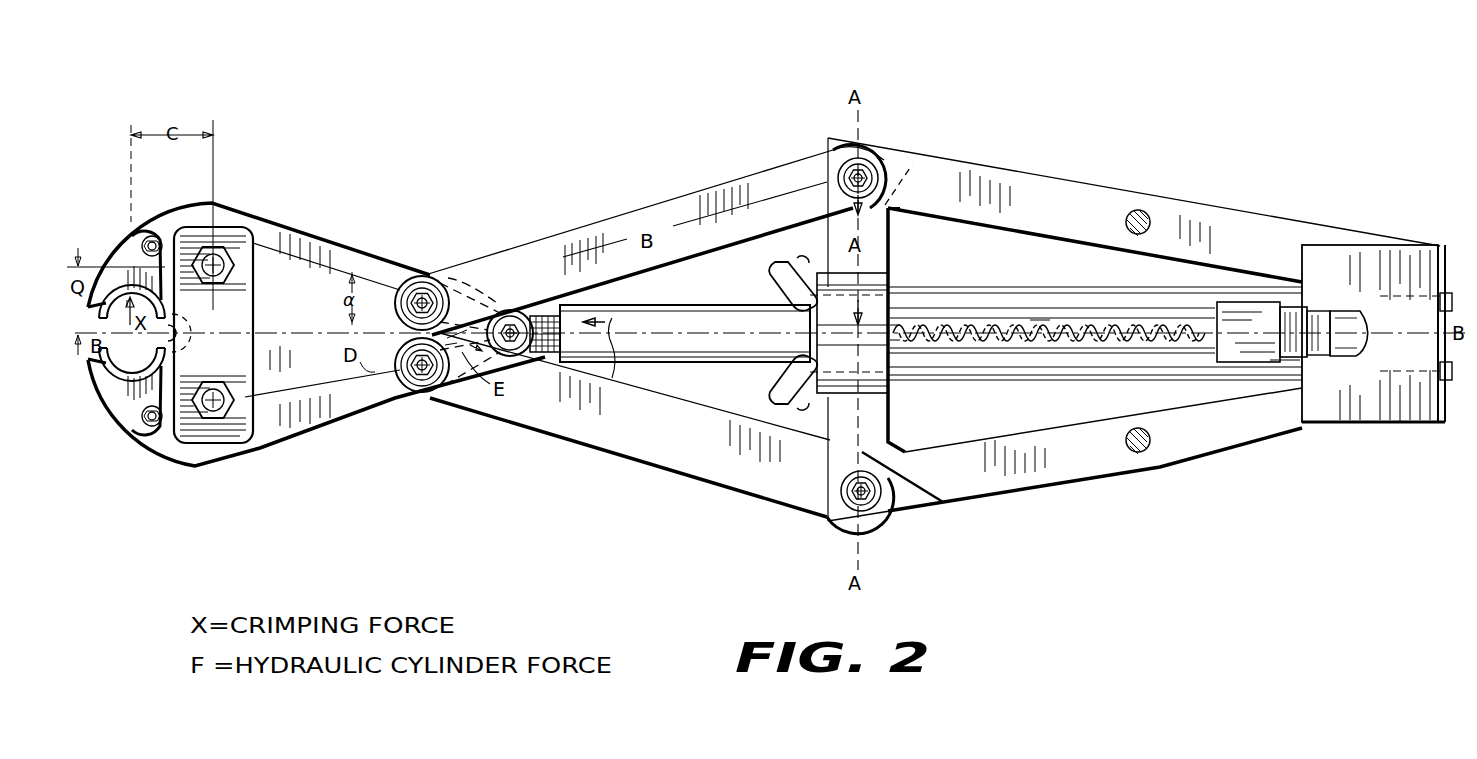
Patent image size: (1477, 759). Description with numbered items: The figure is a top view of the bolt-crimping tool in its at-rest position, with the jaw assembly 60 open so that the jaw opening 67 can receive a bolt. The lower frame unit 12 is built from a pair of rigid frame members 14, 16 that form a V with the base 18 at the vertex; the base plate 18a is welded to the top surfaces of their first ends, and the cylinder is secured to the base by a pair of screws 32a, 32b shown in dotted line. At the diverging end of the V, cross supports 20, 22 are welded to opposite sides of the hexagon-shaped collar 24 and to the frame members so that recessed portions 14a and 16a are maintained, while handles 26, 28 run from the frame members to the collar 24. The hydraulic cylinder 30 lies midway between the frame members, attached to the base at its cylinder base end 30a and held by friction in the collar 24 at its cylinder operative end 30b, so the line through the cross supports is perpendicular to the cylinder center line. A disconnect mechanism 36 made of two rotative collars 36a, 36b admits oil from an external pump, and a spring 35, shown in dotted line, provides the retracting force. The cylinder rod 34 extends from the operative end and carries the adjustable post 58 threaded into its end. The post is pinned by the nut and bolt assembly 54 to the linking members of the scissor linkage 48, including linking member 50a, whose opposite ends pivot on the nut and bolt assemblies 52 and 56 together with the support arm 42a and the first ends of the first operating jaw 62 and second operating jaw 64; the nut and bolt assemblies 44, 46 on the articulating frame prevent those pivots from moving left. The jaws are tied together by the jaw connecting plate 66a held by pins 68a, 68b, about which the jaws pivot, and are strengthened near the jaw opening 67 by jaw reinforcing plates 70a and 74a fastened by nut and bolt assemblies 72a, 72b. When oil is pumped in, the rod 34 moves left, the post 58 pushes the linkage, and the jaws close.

The lower frame unit 12 is at (1445, 38).
The rigid frame member 14 is at (1092, 463).
The recessed portion 14a is at (915, 505).
The rigid frame member 16 is at (1058, 192).
The recessed portion 16a is at (905, 165).
The base 18 is at (1365, 405).
The base plate 18a is at (1412, 262).
The cross support 20 is at (894, 428).
The cross support 22 is at (902, 232).
The hexagon-shaped collar 24 is at (893, 288).
The handle 26 is at (790, 390).
The handle 28 is at (790, 268).
The hydraulic cylinder 30 is at (1052, 343).
The cylinder base end 30a is at (1268, 372).
The cylinder operative end 30b is at (905, 348).
The screw 32a is at (1450, 382).
The screw 32b is at (1450, 292).
The cylinder rod 34 is at (685, 347).
The spring 35 is at (1040, 348).
The disconnect mechanism 36 is at (1292, 300).
The rotative collar 36a is at (1240, 300).
The rotative collar 36b is at (1345, 322).
The support arm 42a is at (630, 425).
The nut and bolt assembly 44 is at (878, 512).
The nut and bolt assembly 46 is at (872, 168).
The scissor linkage 48 is at (462, 300).
The linking member 50a is at (468, 370).
The nut and bolt assembly 52 is at (425, 392).
The nut and bolt assembly 54 is at (512, 310).
The nut and bolt assembly 56 is at (412, 282).
The adjustable post 58 is at (542, 318).
The jaw assembly 60 is at (518, 548).
The first operating jaw 62 is at (325, 413).
The second operating jaw 64 is at (330, 252).
The jaw connecting plate 66a is at (210, 432).
The jaw opening 67 is at (132, 333).
The pin 68a is at (222, 410).
The pin 68b is at (222, 250).
The jaw reinforcing plate 70a is at (133, 377).
The nut and bolt assembly 72a is at (153, 425).
The nut and bolt assembly 72b is at (152, 236).
The jaw reinforcing plate 74a is at (142, 273).